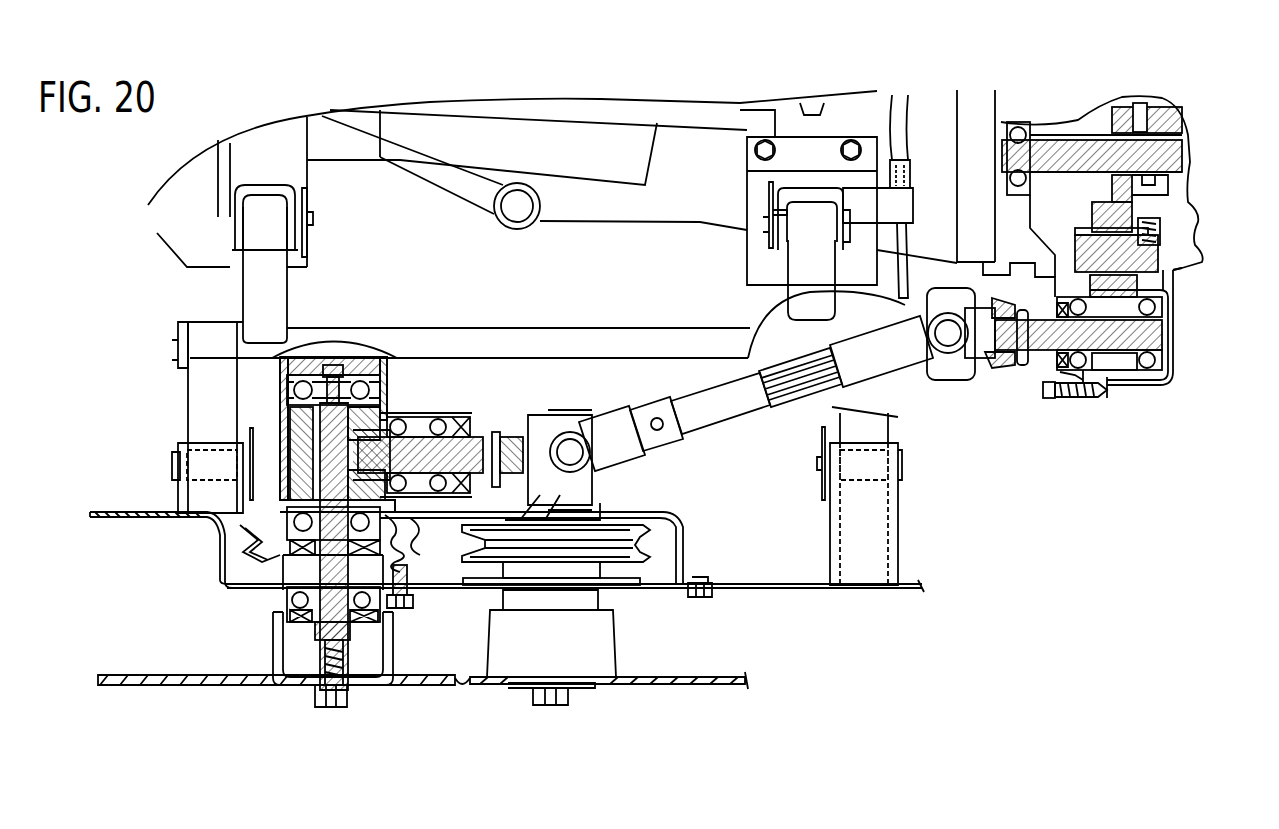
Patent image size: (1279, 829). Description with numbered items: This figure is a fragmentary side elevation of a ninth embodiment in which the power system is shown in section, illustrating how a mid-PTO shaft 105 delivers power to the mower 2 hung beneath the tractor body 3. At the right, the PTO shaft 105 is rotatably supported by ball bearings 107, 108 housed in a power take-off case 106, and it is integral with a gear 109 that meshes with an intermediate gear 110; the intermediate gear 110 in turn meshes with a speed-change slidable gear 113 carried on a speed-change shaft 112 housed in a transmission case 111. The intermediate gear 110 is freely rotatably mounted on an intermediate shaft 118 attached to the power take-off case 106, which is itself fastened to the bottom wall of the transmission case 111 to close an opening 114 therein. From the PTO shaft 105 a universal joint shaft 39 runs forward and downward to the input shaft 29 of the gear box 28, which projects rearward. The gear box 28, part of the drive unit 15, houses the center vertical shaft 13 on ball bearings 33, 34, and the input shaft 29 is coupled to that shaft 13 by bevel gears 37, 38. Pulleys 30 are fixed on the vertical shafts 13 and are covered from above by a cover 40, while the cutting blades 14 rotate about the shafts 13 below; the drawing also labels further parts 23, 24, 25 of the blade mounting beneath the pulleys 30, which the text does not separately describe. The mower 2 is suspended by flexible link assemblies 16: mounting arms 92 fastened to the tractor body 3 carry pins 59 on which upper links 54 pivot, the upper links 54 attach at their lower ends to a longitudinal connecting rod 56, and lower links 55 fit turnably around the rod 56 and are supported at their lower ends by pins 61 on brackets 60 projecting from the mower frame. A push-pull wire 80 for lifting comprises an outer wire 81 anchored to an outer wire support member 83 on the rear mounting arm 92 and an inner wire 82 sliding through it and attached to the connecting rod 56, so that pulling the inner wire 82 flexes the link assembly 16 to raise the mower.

The mower 2 is at (262, 692).
The tractor body 3 is at (572, 228).
The vertical shafts 13 is at (308, 688).
The cutting blades 14 is at (462, 690).
The drive unit 15 is at (268, 393).
The flexible link assemblies 16 is at (235, 316).
The nut 23 is at (405, 604).
The lower housing 24 is at (280, 606).
The blade holder cup 25 is at (380, 690).
The gear box 28 is at (400, 440).
The input shaft 29 is at (490, 428).
The pulleys 30 is at (224, 548).
The ball bearing 33 is at (400, 540).
The ball bearing 34 is at (418, 355).
The bevel gear 37 is at (395, 510).
The bevel gear 38 is at (450, 360).
The universal joint shaft 39 is at (742, 410).
The cover 40 is at (643, 512).
The upper links 54 is at (285, 297).
The lower links 55 is at (197, 408).
The connecting rod 56 is at (592, 335).
The pin 59 is at (308, 222).
The bracket 60 is at (197, 497).
The pin 61 is at (180, 460).
The push-pull wire 80 is at (908, 140).
The outer wire 81 is at (900, 152).
The inner wire 82 is at (905, 245).
The outer wire support member 83 is at (912, 203).
The mounting arms 92 is at (293, 193).
The mid-PTO shaft 105 is at (1053, 337).
The power take-off case 106 is at (1162, 300).
The ball bearing 107 is at (1082, 398).
The ball bearing 108 is at (1168, 385).
The gear 109 is at (1113, 370).
The intermediate gear 110 is at (1160, 222).
The transmission case 111 is at (1195, 268).
The speed-change shaft 112 is at (1182, 157).
The speed-change slidable gear 113 is at (1158, 128).
The opening 114 is at (1040, 300).
The intermediate shaft 118 is at (1078, 258).